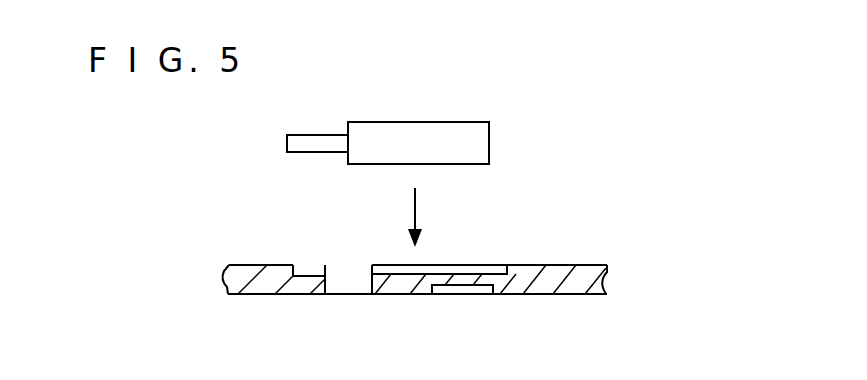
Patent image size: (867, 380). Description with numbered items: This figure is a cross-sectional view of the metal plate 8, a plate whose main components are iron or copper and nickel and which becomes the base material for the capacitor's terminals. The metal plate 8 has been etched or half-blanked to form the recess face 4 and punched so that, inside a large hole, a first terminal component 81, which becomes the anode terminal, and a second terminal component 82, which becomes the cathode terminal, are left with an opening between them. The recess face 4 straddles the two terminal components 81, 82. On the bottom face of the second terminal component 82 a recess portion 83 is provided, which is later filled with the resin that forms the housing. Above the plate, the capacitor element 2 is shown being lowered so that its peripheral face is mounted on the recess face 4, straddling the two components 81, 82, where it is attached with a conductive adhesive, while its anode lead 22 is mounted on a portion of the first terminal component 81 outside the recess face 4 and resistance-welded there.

The capacitor element 2 is at (412, 137).
The anode lead 22 is at (305, 143).
The recess face 4 is at (310, 267).
The metal plate 8 is at (630, 263).
The first terminal component 81 is at (258, 282).
The second terminal component 82 is at (395, 288).
The recess portion 83 is at (465, 292).